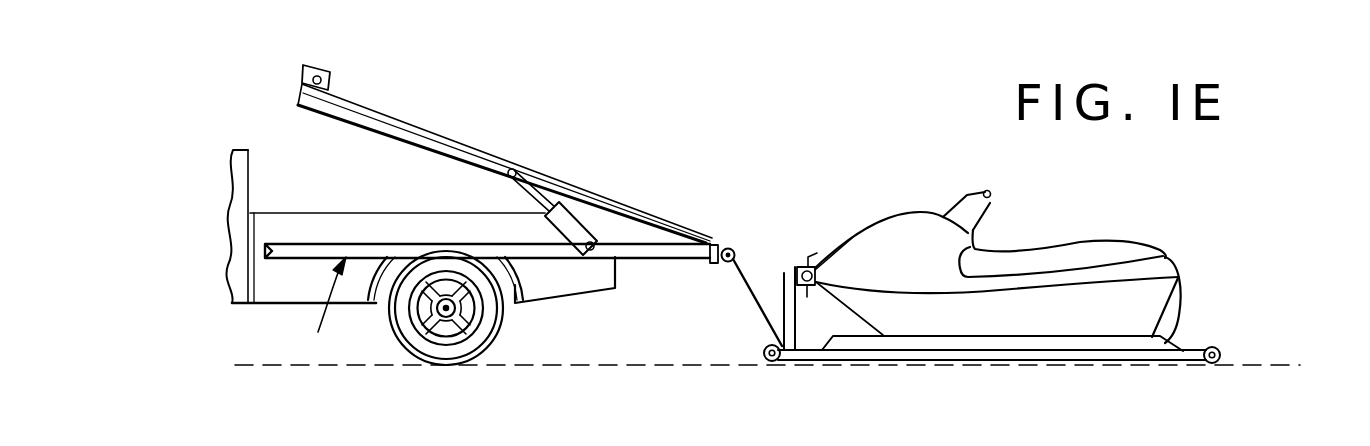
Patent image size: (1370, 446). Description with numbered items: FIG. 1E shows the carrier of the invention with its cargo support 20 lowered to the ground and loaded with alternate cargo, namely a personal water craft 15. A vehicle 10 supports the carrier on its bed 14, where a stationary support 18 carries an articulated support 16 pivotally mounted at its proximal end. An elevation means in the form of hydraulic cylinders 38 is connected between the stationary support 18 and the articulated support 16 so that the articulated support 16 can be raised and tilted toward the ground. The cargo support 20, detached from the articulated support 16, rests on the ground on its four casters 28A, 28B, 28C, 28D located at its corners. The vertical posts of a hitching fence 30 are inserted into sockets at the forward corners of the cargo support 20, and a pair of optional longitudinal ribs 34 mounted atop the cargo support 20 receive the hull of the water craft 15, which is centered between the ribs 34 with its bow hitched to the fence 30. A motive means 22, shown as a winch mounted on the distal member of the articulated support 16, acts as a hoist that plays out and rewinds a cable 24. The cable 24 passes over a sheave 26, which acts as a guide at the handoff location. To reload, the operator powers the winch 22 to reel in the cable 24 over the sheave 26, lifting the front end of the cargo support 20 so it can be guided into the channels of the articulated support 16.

The vehicle 10 is at (276, 306).
The bed 14 is at (341, 305).
The personal water craft 15 is at (912, 220).
The articulated support 16 is at (329, 114).
The stationary support 18 is at (318, 243).
The cargo support 20 is at (1213, 347).
The motive means 22 is at (304, 62).
The cable 24 is at (445, 131).
The sheave 26 is at (733, 250).
The caster 28A is at (765, 353).
The caster 28B is at (713, 346).
The caster 28C is at (1222, 353).
The caster 28D is at (1274, 349).
The hitching fence 30 is at (783, 285).
The longitudinal ribs 34 is at (1197, 346).
The hydraulic cylinders 38 is at (567, 215).